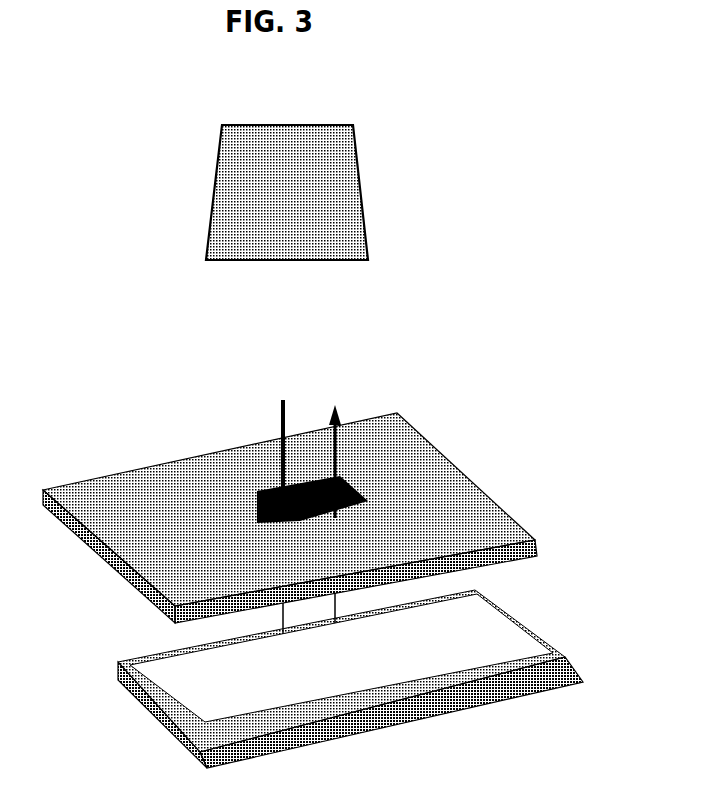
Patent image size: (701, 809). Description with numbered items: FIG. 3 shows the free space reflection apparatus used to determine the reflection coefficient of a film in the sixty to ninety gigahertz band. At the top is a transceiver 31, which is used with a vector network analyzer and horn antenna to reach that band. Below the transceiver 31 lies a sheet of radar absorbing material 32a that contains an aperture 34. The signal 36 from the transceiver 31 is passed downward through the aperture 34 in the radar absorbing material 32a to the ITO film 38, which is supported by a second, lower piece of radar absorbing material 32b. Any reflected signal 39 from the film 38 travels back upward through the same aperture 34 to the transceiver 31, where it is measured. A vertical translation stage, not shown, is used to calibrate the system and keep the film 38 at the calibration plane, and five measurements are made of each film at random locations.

The transceiver 31 is at (388, 172).
The radar absorbing material 32a is at (505, 495).
The radar absorbing material 32b is at (580, 658).
The aperture 34 is at (248, 501).
The signal 36 is at (262, 454).
The ITO film 38 is at (262, 685).
The reflected signal 39 is at (353, 452).